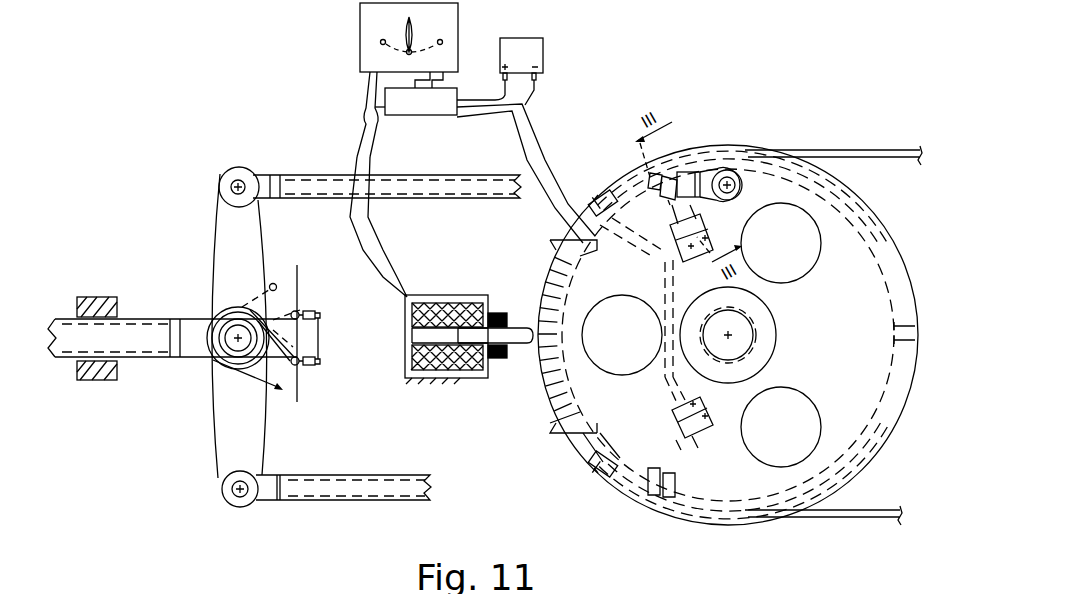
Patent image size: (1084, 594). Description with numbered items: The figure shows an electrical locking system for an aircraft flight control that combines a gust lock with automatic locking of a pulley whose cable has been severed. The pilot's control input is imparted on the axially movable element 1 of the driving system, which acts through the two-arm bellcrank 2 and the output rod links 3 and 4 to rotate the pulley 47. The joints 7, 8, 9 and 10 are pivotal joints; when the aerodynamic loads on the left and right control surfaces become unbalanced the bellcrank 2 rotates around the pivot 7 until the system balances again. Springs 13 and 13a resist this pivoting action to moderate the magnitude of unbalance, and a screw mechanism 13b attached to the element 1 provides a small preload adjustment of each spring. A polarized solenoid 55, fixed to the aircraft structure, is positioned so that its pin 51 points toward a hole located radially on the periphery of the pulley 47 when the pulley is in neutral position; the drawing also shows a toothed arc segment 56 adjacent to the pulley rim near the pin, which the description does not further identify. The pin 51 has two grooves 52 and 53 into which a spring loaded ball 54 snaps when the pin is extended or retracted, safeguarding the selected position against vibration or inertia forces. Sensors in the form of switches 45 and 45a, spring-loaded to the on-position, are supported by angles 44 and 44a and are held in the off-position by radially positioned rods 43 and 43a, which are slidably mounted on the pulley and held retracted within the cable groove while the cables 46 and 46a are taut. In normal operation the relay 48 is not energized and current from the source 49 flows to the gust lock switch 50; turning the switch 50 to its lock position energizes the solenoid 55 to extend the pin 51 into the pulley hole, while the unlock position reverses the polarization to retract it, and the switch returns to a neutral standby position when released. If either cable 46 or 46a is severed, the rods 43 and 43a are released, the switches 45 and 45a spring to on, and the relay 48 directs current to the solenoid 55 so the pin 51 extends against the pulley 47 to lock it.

The axially movable element 1 is at (140, 328).
The two-arm bellcrank 2 is at (225, 230).
The rod link 3 is at (303, 183).
The rod link 4 is at (310, 490).
The pivotal joint 7 is at (236, 340).
The pivotal joint 8 is at (230, 182).
The pivotal joint 9 is at (233, 493).
The pivotal joint 10 is at (729, 183).
The spring 13 is at (276, 285).
The spring 13a is at (275, 360).
The screw mechanism 13b is at (318, 364).
The rod 43 is at (672, 207).
The rod 43a is at (680, 471).
The angle 44 is at (708, 243).
The angle 44a is at (706, 429).
The switch 45 is at (647, 260).
The switch 45a is at (668, 436).
The cable 46 is at (873, 148).
The cable 46a is at (858, 519).
The pulley 47 is at (850, 238).
The relay 48 is at (408, 113).
The source 49 is at (538, 45).
The gust lock switch 50 is at (440, 25).
The pin 51 is at (510, 343).
The groove 52 is at (440, 305).
The groove 53 is at (477, 305).
The spring loaded ball 54 is at (500, 311).
The polarized solenoid 55 is at (480, 370).
The brake shoe 56 is at (557, 388).